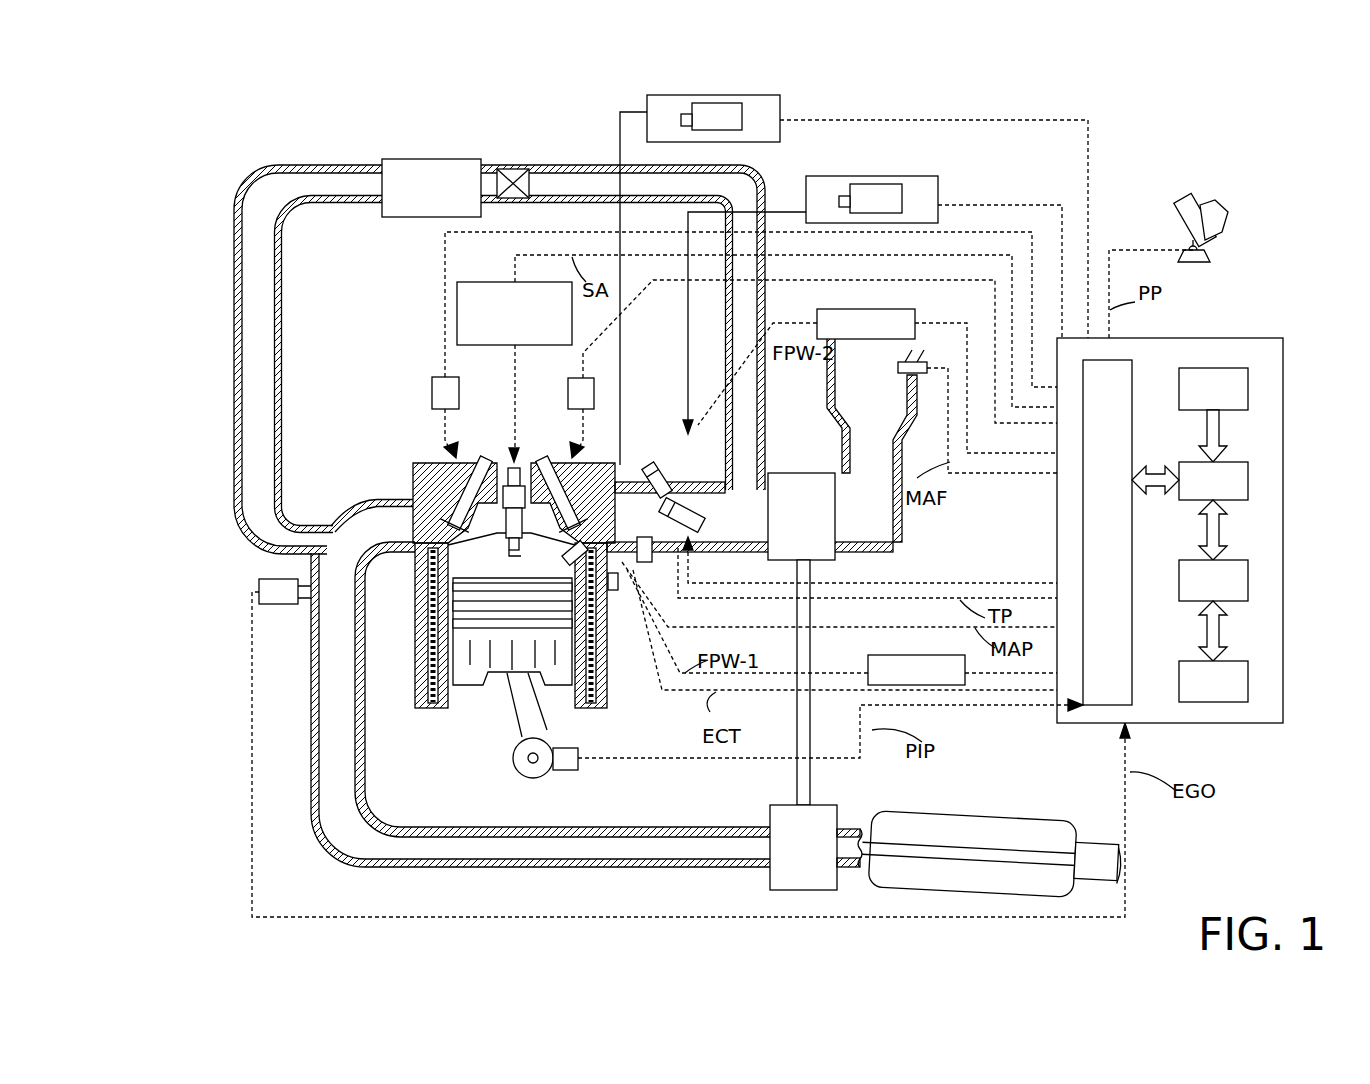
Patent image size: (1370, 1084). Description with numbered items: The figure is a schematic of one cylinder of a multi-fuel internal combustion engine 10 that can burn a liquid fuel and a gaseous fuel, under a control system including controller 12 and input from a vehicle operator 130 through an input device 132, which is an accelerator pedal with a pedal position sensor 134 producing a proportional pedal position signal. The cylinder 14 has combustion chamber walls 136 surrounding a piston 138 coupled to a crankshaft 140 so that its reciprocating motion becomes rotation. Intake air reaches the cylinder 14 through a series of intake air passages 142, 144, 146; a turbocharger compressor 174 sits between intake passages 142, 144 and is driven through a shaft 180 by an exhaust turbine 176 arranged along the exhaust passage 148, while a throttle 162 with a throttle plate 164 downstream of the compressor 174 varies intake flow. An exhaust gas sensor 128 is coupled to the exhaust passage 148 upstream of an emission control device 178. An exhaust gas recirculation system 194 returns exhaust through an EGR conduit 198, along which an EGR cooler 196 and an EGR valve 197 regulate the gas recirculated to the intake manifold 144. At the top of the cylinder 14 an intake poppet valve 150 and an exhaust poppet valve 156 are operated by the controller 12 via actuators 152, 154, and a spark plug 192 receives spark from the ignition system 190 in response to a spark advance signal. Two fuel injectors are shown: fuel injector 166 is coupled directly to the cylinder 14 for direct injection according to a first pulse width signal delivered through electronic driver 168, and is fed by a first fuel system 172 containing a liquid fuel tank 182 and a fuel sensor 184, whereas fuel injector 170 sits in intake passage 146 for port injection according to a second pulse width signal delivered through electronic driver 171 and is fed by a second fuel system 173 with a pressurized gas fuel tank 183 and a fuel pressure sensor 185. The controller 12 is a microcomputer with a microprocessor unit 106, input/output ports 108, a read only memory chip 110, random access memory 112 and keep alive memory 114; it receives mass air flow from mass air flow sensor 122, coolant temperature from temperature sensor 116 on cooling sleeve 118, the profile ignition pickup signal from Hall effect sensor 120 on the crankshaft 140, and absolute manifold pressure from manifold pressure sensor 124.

The internal combustion engine 10 is at (370, 392).
The controller 12 is at (1280, 338).
The cylinder 14 is at (440, 560).
The microprocessor unit 106 is at (1250, 478).
The input/output ports 108 is at (1135, 366).
The read only memory chip 110 is at (1250, 385).
The random access memory 112 is at (1250, 583).
The keep alive memory 114 is at (1250, 683).
The temperature sensor 116 is at (618, 590).
The cooling sleeve 118 is at (605, 700).
The Hall effect sensor 120 is at (570, 772).
The mass air flow sensor 122 is at (926, 361).
The MAP sensor 124 is at (652, 562).
The exhaust gas sensor 128 is at (262, 579).
The vehicle operator 130 is at (1222, 215).
The input device 132 is at (1180, 226).
The pedal position sensor 134 is at (1212, 256).
The combustion chamber walls 136 is at (455, 708).
The piston 138 is at (497, 660).
The crankshaft 140 is at (520, 776).
The intake air passage 142 is at (890, 389).
The intake air passage 144 is at (758, 527).
The intake air passage 146 is at (658, 527).
The exhaust passage 148 is at (406, 533).
The intake poppet valve 150 is at (556, 475).
The actuator 152 is at (568, 393).
The actuator 154 is at (432, 392).
The exhaust poppet valve 156 is at (440, 490).
The throttle 162 is at (682, 503).
The throttle plate 164 is at (680, 480).
The fuel injector 166 is at (586, 541).
The electronic driver 168 is at (870, 655).
The fuel injector 170 is at (668, 466).
The electronic driver 171 is at (818, 312).
The first fuel system 172 is at (745, 95).
The second fuel system 173 is at (930, 180).
The compressor 174 is at (785, 473).
The exhaust turbine 176 is at (768, 878).
The emission control device 178 is at (1045, 818).
The shaft 180 is at (812, 765).
The fuel tank 182 is at (718, 103).
The pressurized gas fuel tank 183 is at (878, 184).
The fuel sensor 184 is at (681, 114).
The fuel pressure sensor 185 is at (839, 200).
The ignition system 190 is at (480, 282).
The spark plug 192 is at (511, 468).
The exhaust gas recirculation system 194 is at (218, 247).
The EGR cooler 196 is at (430, 159).
The EGR valve 197 is at (505, 169).
The EGR conduit 198 is at (600, 167).